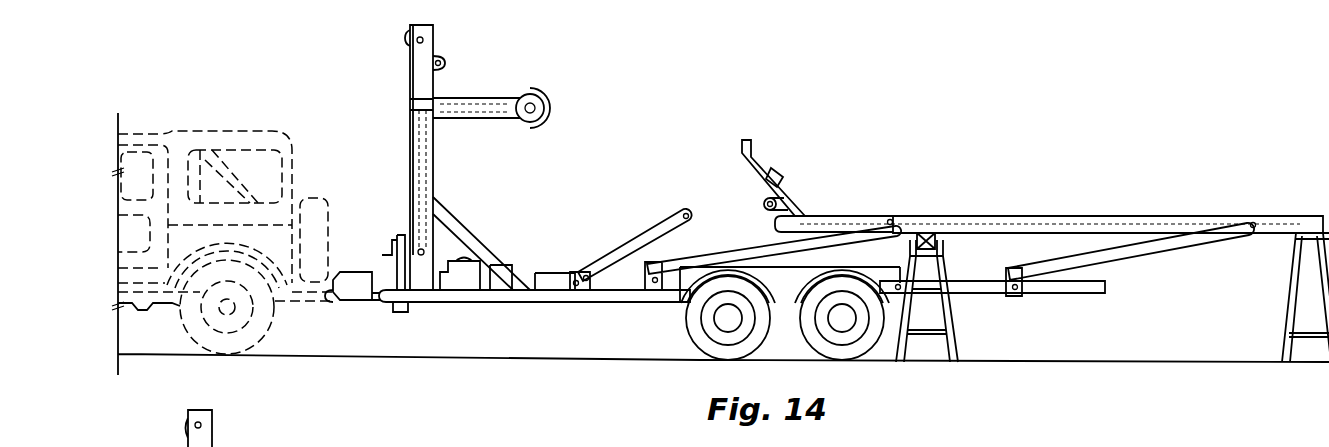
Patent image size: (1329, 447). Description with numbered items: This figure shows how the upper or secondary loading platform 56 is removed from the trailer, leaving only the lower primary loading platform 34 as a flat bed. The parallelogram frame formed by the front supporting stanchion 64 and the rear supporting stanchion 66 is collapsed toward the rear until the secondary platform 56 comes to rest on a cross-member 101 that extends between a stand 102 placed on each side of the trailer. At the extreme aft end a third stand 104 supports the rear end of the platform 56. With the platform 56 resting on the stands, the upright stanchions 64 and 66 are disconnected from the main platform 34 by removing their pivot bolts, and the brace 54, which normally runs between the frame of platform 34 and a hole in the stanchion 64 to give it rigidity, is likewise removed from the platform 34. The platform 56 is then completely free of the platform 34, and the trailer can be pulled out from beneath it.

The primary loading platform 34 is at (607, 287).
The brace 54 is at (637, 231).
The front supporting stanchion 64 is at (750, 255).
The secondary loading platform 56 is at (1055, 218).
The rear supporting stanchion 66 is at (1180, 248).
The cross-member 101 is at (927, 233).
The stand 102 is at (950, 316).
The third stand 104 is at (1290, 308).